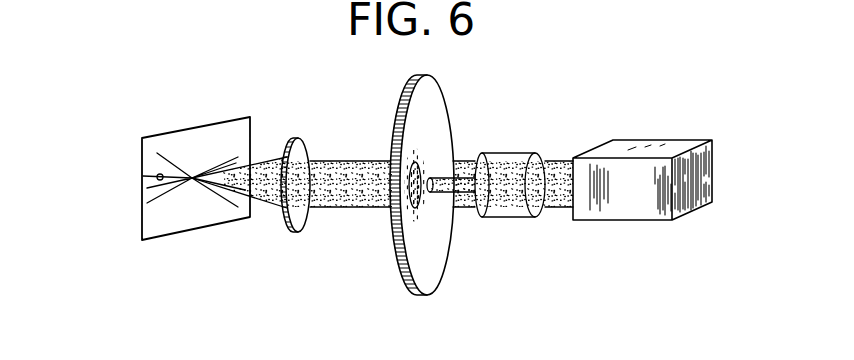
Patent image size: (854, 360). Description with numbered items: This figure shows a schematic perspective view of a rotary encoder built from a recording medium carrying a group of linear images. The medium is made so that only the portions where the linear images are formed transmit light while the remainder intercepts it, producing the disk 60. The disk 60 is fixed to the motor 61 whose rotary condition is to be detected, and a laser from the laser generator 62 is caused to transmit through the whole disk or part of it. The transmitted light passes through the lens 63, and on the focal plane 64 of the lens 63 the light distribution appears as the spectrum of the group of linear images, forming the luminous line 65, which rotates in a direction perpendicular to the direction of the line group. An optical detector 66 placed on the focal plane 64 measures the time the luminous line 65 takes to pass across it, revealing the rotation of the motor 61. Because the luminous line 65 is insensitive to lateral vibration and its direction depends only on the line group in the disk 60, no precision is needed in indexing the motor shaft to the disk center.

The disk 60 is at (429, 87).
The motor 61 is at (518, 154).
The laser generator 62 is at (621, 197).
The lens 63 is at (300, 148).
The focal plane 64 is at (200, 131).
The luminous line 65 is at (170, 195).
The optical detector 66 is at (156, 177).